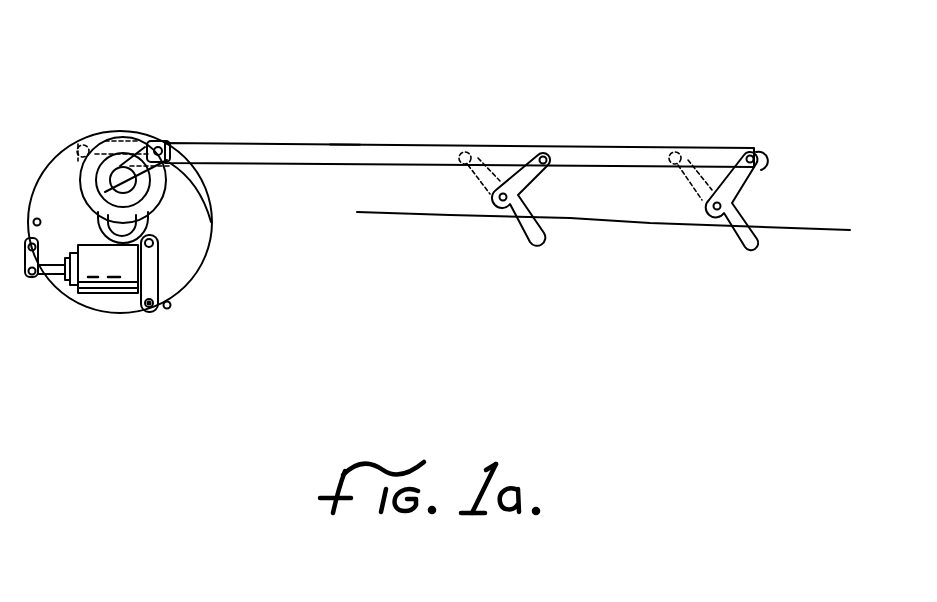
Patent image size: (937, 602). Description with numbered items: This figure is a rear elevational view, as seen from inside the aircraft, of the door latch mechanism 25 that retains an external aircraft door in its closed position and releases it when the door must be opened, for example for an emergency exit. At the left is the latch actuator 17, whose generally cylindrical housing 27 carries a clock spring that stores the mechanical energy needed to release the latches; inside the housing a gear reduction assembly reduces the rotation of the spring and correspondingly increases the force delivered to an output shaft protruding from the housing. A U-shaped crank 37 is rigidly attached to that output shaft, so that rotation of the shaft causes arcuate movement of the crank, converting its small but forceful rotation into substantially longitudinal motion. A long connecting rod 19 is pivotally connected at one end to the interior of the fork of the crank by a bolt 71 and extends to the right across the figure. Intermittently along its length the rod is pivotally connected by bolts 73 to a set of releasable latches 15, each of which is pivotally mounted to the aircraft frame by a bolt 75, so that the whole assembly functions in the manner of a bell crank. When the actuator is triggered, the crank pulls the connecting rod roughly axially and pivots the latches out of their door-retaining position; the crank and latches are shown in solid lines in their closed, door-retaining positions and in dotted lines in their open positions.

The releasable latches 15 is at (540, 244).
The latch actuator 17 is at (60, 142).
The connecting rod 19 is at (403, 146).
The door latch mechanism 25 is at (341, 145).
The actuator housing 27 is at (115, 318).
The U-shaped crank 37 is at (141, 150).
The bolt 71 is at (204, 211).
The bolts 73 is at (549, 153).
The bolts 75 is at (501, 207).